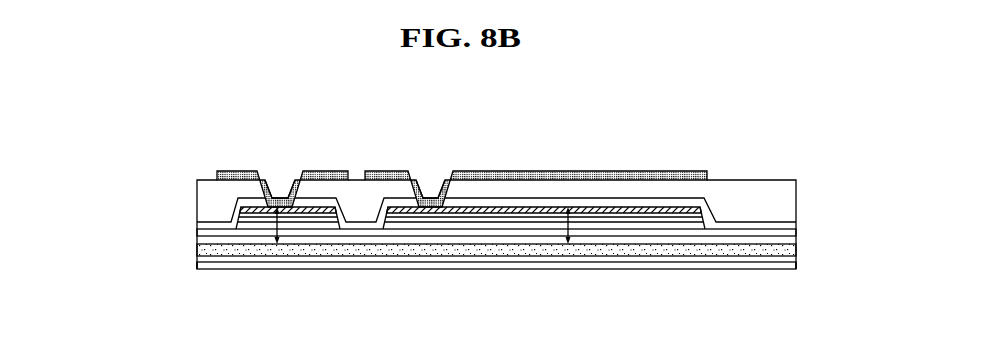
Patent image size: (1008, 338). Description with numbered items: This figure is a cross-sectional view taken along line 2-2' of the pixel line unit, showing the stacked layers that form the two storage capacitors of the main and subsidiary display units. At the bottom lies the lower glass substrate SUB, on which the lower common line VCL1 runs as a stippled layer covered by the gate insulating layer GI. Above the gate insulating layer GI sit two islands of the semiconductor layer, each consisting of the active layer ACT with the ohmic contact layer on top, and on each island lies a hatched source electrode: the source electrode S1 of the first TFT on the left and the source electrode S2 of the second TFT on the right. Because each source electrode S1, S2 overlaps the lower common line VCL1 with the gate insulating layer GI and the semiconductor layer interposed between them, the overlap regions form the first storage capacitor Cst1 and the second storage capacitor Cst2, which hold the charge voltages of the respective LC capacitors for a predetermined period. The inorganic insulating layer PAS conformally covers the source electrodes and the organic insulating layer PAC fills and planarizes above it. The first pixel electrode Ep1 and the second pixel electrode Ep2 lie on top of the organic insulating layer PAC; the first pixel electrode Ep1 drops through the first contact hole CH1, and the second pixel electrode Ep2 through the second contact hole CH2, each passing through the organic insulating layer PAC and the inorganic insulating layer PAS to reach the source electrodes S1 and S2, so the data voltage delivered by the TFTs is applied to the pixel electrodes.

The first pixel electrode Ep1 is at (217, 175).
The second pixel electrode Ep2 is at (708, 172).
The first contact hole CH1 is at (281, 173).
The second contact hole CH2 is at (430, 173).
The organic insulating layer PAC is at (201, 197).
The inorganic insulating layer PAS is at (201, 228).
The gate insulating layer GI is at (201, 237).
The lower common line VCL1 is at (201, 252).
The lower glass substrate SUB is at (201, 267).
The source electrode of the first TFT S1 is at (250, 211).
The source electrode of the second TFT S2 is at (492, 212).
The active layer ACT is at (440, 227).
The first storage capacitor Cst1 is at (301, 225).
The second storage capacitor Cst2 is at (592, 225).
The section line 2-2' 2 is at (199, 282).
The section line 2- 2' is at (799, 282).